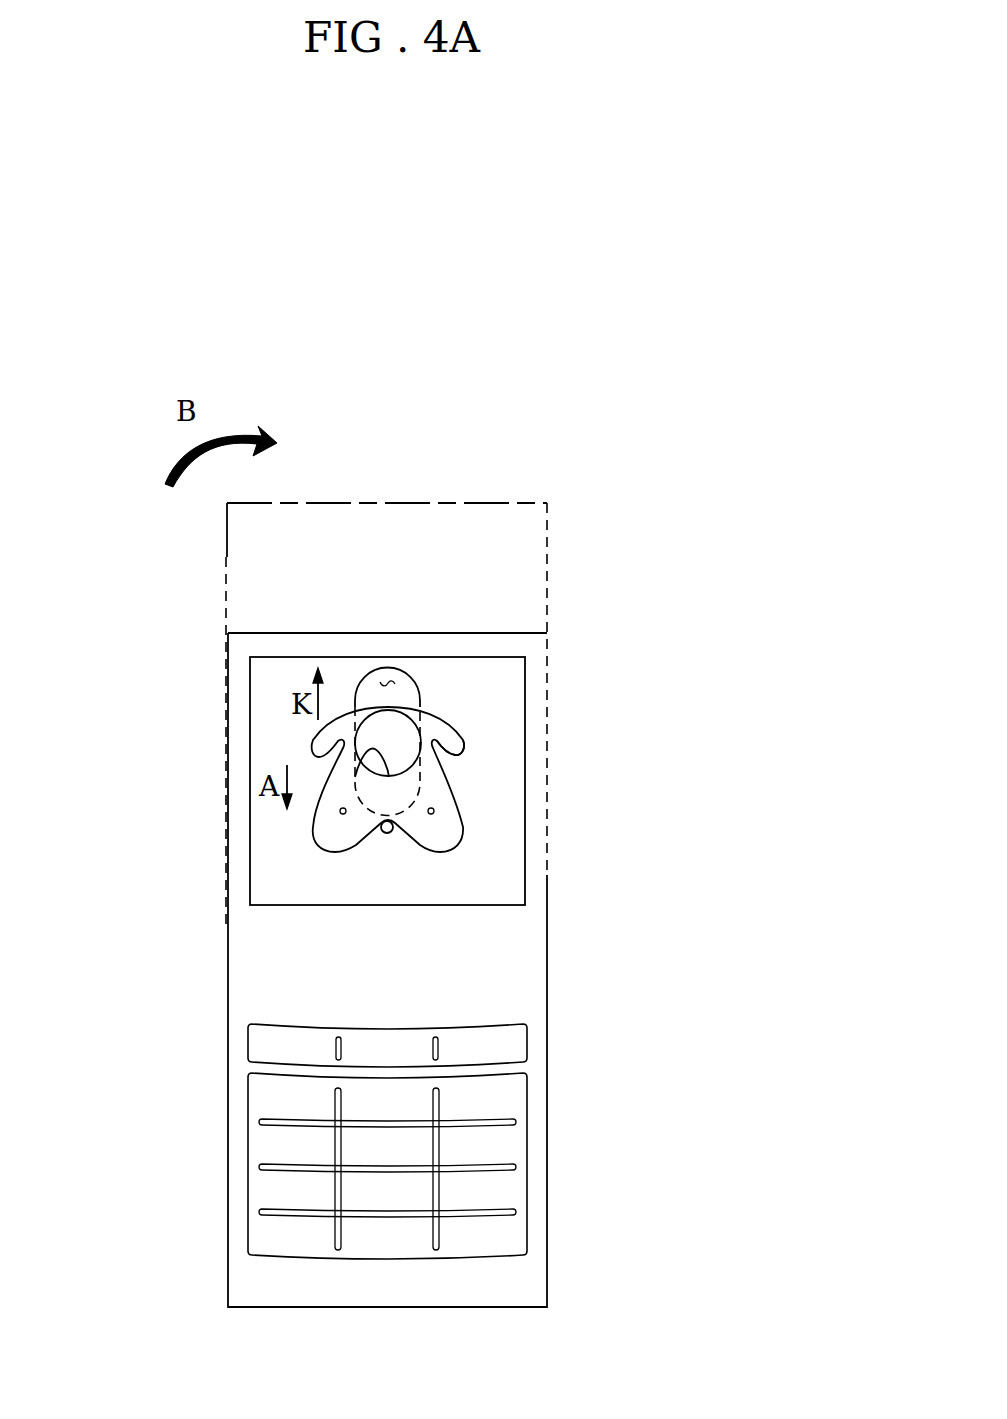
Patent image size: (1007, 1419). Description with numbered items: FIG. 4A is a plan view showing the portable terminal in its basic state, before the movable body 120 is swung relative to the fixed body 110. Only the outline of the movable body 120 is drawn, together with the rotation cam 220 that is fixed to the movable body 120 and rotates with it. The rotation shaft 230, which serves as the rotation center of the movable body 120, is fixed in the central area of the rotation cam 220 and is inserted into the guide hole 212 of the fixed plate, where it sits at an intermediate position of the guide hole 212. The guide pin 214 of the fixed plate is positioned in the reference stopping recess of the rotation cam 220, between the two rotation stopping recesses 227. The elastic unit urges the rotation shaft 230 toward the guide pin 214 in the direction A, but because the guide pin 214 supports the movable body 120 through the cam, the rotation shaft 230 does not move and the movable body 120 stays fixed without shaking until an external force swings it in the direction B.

The fixed body 110 is at (548, 1112).
The movable body 120 is at (547, 565).
The guide hole 212 is at (385, 680).
The guide pin 214 is at (388, 833).
The rotation cam 220 is at (462, 807).
The rotation stopping recess 227 is at (440, 751).
The rotation shaft 230 is at (355, 777).